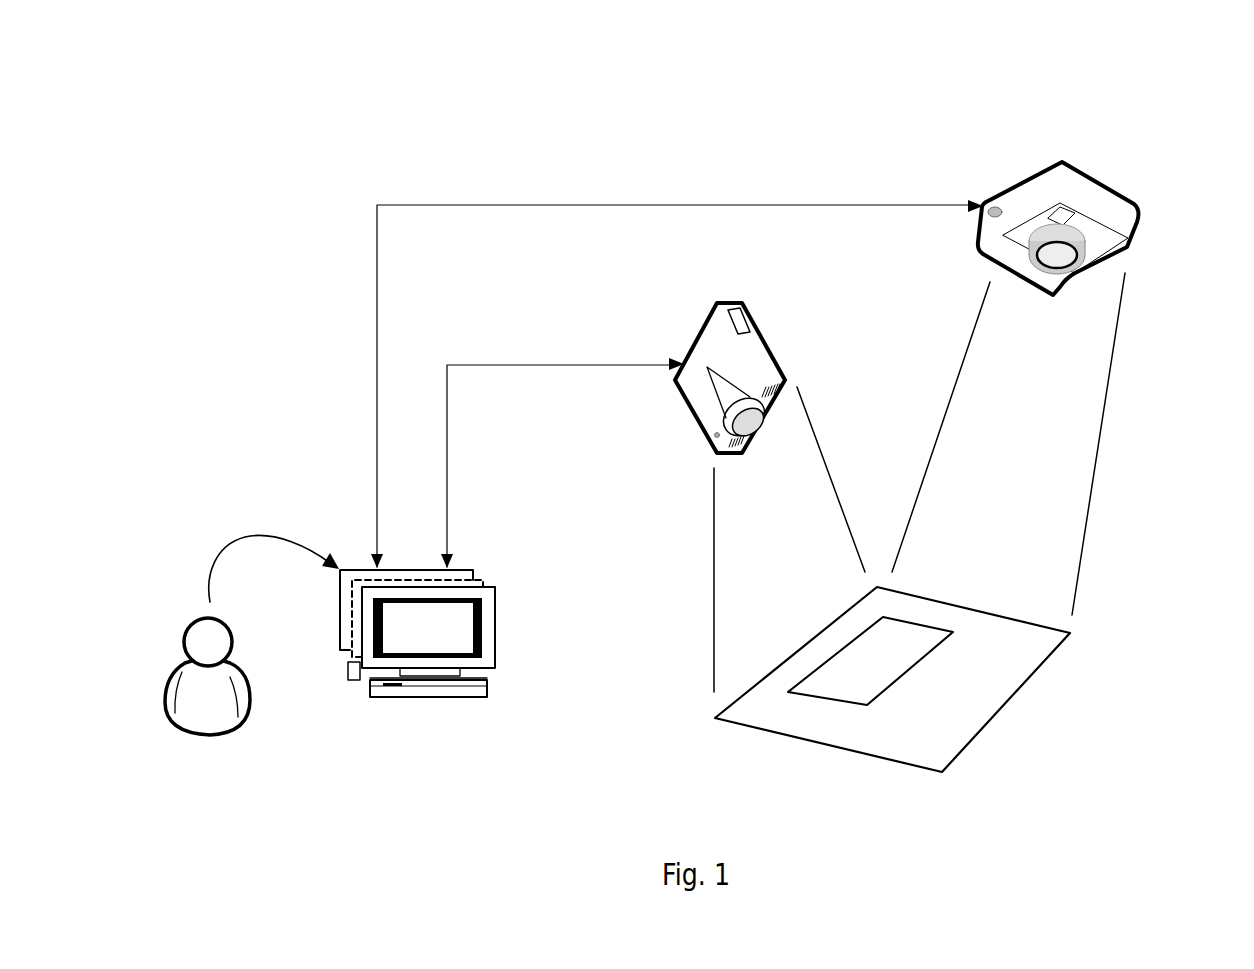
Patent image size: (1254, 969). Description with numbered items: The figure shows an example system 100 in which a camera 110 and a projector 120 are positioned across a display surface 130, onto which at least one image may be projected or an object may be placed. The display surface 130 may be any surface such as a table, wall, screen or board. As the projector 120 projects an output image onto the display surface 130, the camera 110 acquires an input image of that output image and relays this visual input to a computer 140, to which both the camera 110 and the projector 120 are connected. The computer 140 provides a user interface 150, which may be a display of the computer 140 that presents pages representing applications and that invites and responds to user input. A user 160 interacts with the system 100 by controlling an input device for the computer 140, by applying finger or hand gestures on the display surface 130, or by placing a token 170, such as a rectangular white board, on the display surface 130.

The system 100 is at (312, 155).
The camera 110 is at (1103, 168).
The projector 120 is at (760, 317).
The display surface 130 is at (1037, 687).
The computer 140 is at (494, 655).
The user interface 150 is at (485, 635).
The user 160 is at (267, 722).
The token 170 is at (857, 653).